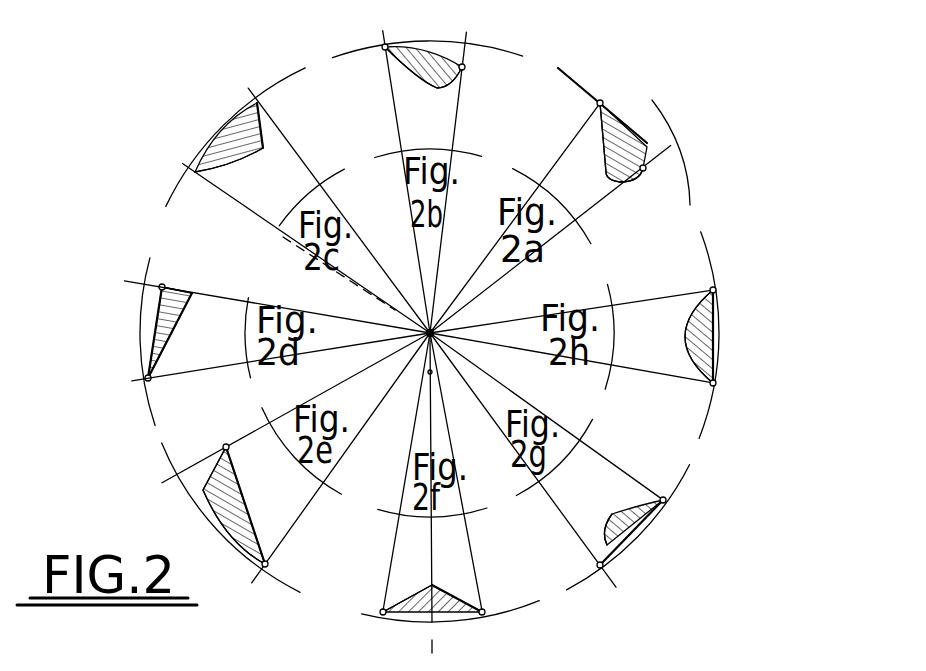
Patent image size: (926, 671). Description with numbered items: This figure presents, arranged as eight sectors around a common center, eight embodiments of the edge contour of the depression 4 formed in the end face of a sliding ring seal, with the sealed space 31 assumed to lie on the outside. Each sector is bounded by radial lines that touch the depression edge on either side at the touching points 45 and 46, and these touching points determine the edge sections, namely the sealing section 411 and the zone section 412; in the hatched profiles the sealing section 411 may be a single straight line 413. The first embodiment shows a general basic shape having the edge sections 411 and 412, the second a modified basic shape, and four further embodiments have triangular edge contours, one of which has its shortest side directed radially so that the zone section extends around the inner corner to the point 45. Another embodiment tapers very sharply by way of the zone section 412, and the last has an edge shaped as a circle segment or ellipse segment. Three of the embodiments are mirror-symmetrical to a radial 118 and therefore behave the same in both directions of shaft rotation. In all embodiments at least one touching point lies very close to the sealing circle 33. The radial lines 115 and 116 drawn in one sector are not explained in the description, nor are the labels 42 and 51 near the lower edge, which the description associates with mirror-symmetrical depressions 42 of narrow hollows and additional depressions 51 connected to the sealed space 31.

The depression 4 is at (437, 80).
The sealing circle 33 is at (558, 68).
The touching point 45 is at (466, 68).
The touching point 46 is at (383, 49).
The edge section 411 is at (630, 135).
The edge section 412 is at (604, 156).
The single straight line 413 is at (430, 335).
The radial line 115 is at (233, 298).
The radial line 116 is at (177, 373).
The radial 118 is at (433, 567).
The mirror-symmetrical depressions 42 is at (201, 660).
The additional depressions 51 is at (278, 654).
The sealed space 31 is at (592, 659).